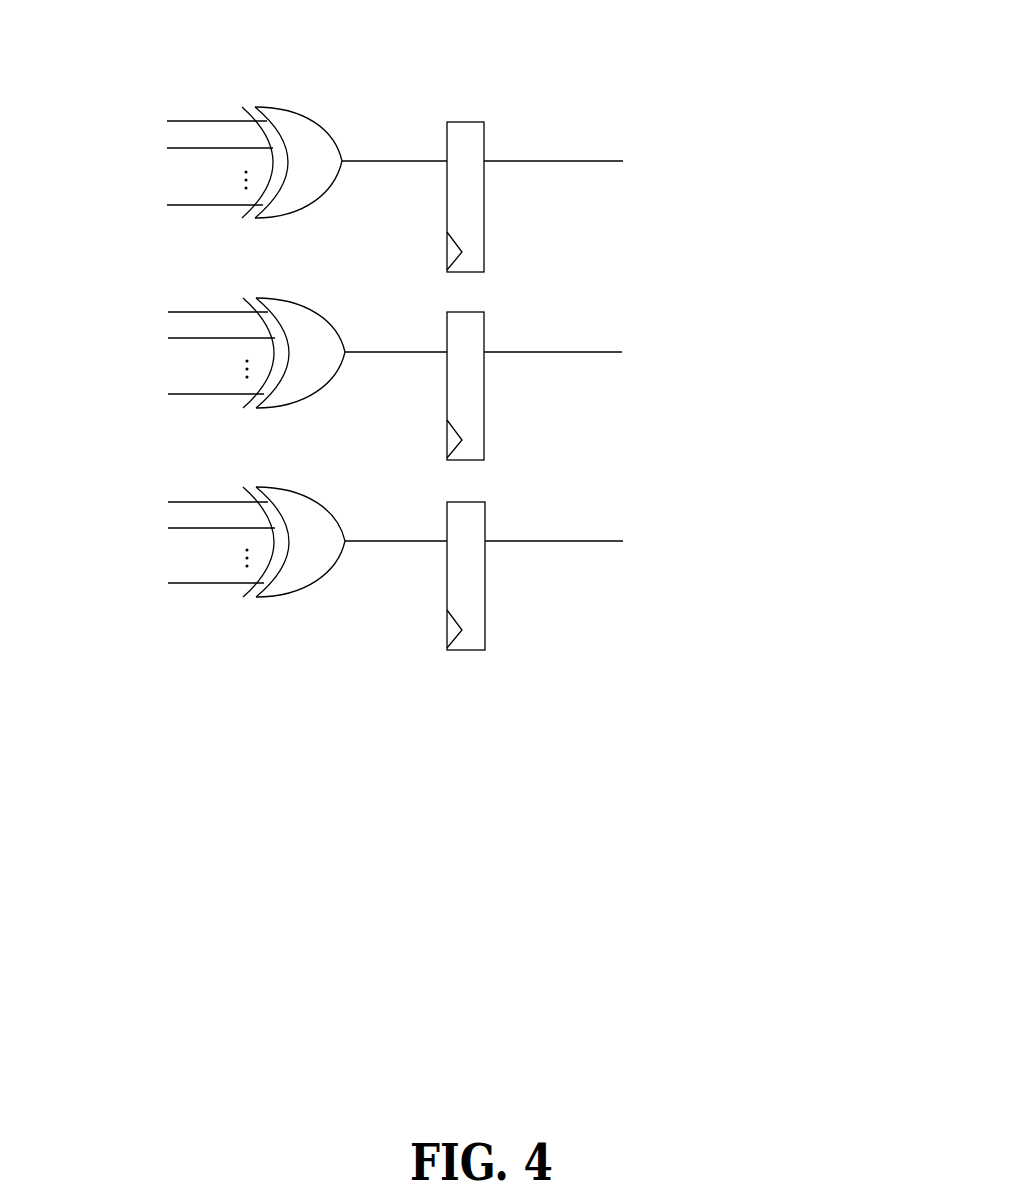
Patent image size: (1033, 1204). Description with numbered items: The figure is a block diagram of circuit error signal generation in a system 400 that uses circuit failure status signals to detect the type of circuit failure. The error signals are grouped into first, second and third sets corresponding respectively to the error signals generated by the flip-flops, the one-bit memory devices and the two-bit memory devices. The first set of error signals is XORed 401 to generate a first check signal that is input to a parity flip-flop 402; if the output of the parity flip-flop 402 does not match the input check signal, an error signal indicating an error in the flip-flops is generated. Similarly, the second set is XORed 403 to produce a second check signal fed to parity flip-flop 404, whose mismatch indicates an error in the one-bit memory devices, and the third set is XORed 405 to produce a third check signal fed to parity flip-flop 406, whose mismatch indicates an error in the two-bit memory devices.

The system 400 is at (599, 91).
The XOR 401 is at (316, 104).
The parity flip-flop 402 is at (493, 103).
The XOR 403 is at (305, 294).
The parity flip-flop 404 is at (493, 310).
The XOR 405 is at (306, 482).
The parity flip-flop 406 is at (493, 498).